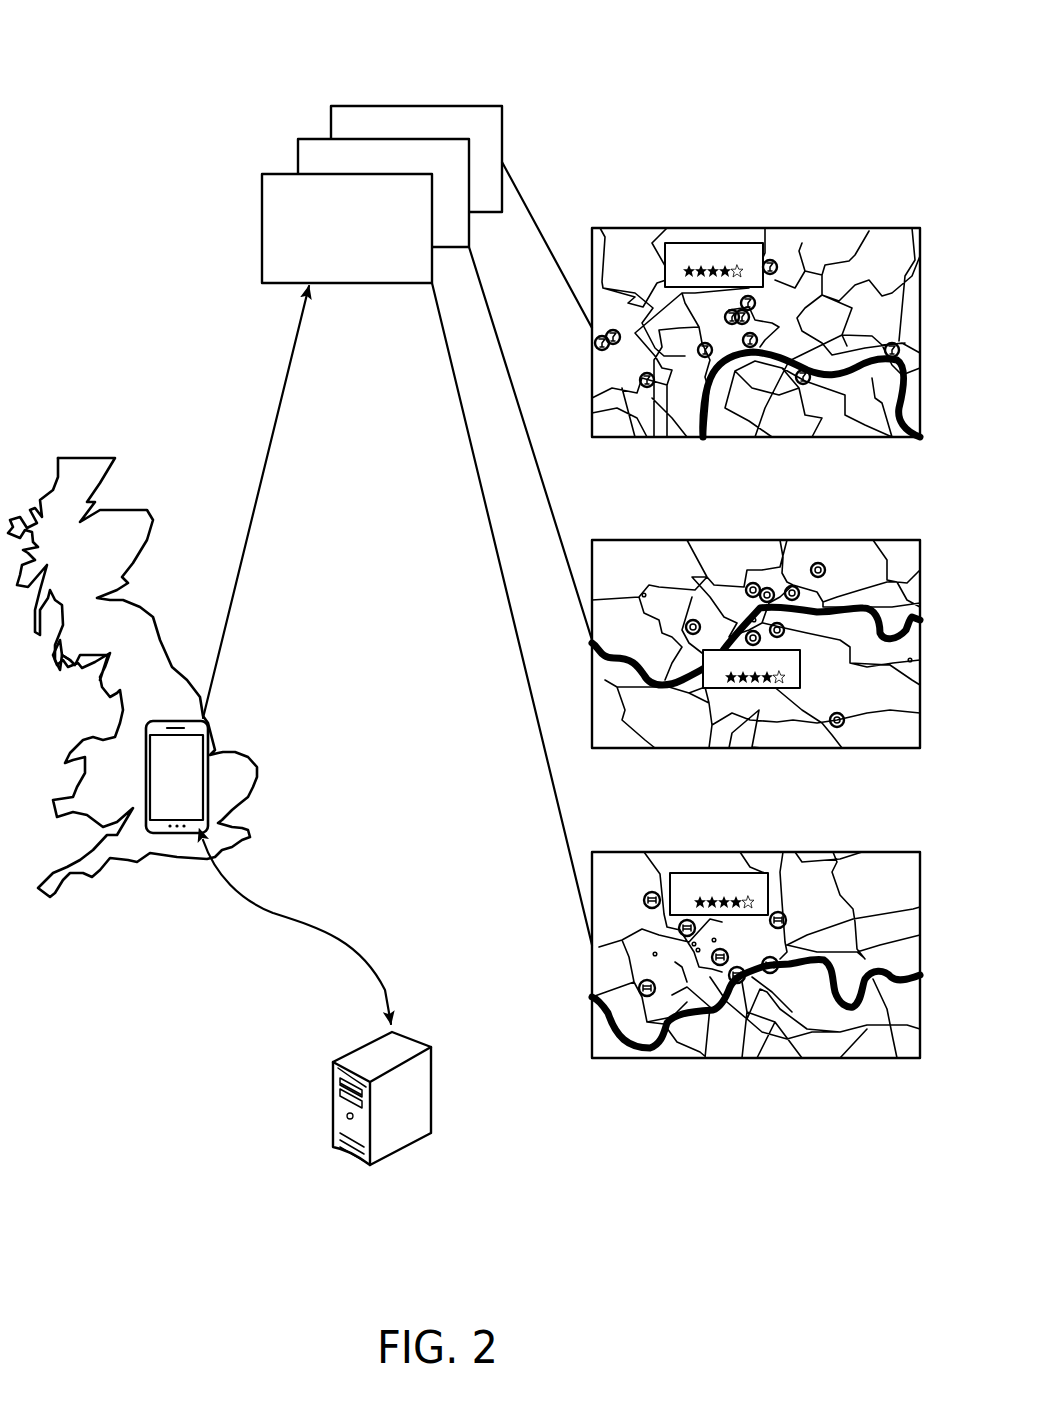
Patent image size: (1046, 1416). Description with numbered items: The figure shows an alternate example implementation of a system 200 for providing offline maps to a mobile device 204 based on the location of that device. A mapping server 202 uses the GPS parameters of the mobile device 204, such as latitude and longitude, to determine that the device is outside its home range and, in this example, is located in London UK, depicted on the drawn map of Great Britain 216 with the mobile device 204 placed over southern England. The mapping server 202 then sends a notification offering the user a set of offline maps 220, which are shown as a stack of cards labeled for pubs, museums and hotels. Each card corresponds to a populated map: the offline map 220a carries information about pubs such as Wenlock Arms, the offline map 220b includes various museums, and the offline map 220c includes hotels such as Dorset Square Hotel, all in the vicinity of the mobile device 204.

The system 200 is at (147, 77).
The mapping server 202 is at (431, 1133).
The mobile device 204 is at (112, 860).
The geographic map 216 is at (80, 458).
The offline maps 220 is at (365, 256).
The offline map 220a is at (857, 228).
The offline map 220b is at (857, 540).
The offline map 220c is at (857, 852).